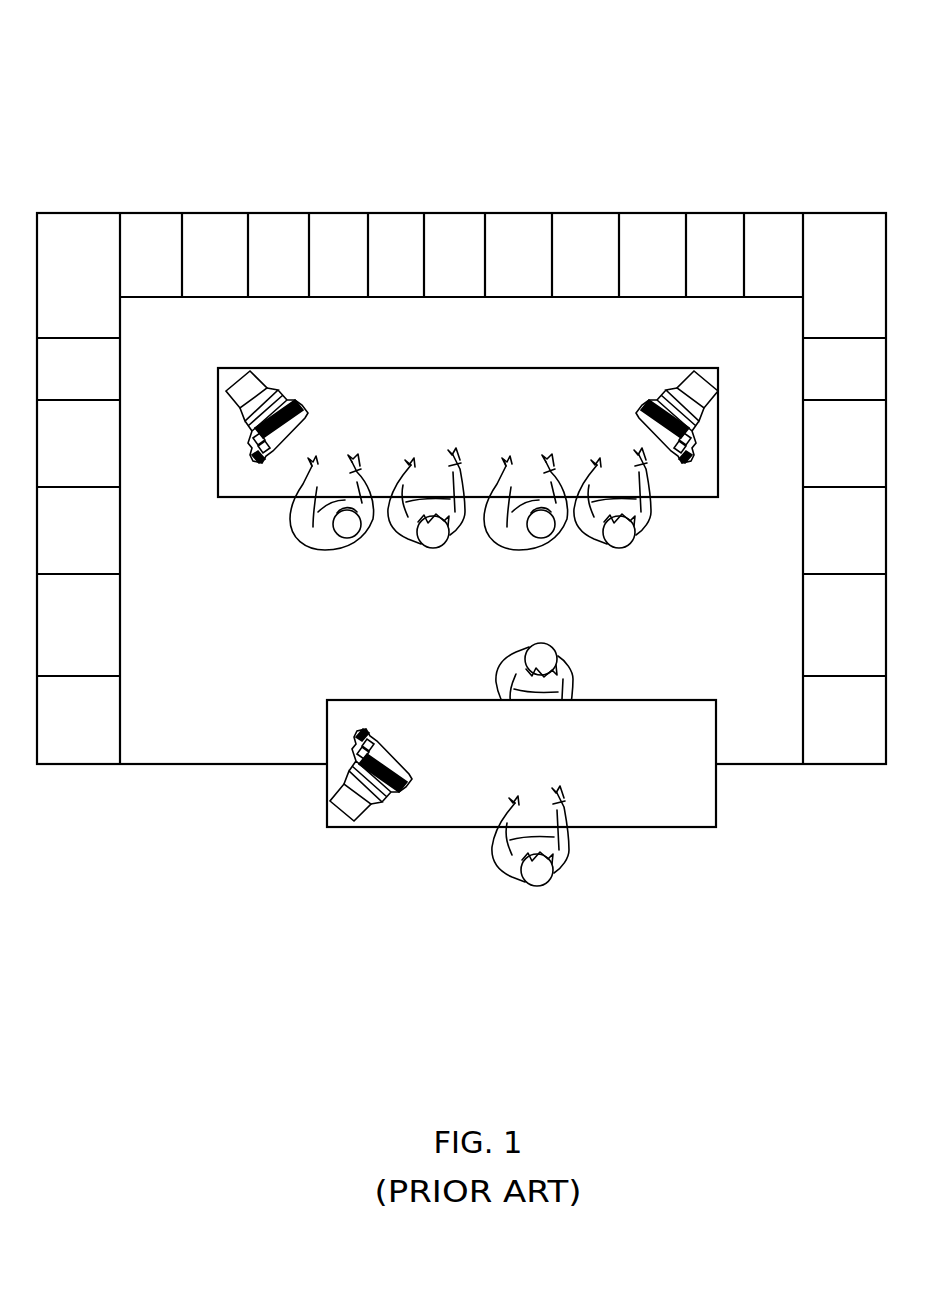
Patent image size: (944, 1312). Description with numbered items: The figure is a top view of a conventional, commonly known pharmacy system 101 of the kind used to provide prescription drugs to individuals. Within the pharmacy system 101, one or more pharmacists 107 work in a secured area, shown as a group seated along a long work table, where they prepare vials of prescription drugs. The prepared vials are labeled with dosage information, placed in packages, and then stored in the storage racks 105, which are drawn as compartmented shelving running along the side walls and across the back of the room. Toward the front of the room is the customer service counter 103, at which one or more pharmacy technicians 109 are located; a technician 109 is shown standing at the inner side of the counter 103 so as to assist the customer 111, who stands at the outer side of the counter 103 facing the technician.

The pharmacy system 101 is at (775, 108).
The customer service counter 103 is at (417, 828).
The storage racks 105 is at (120, 530).
The pharmacists 107 is at (437, 555).
The pharmacy technicians 109 is at (537, 640).
The customer 111 is at (535, 893).